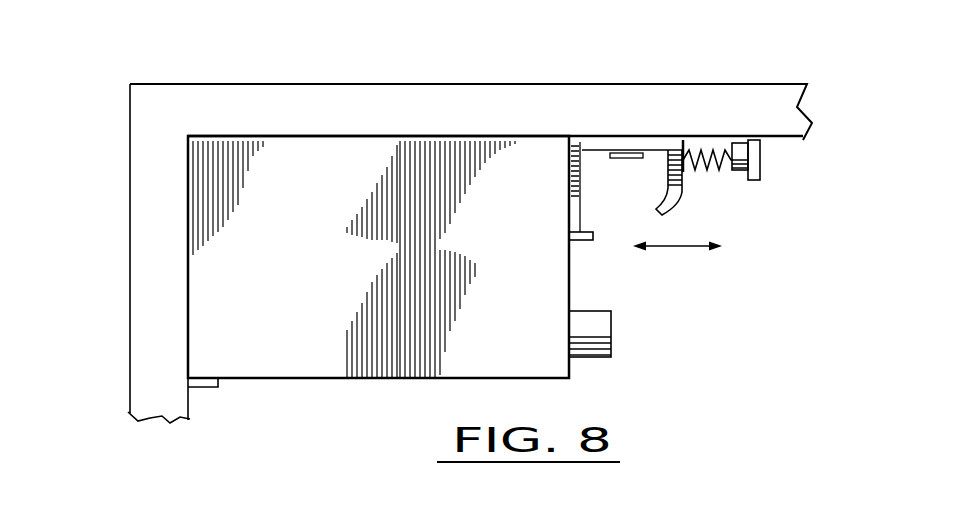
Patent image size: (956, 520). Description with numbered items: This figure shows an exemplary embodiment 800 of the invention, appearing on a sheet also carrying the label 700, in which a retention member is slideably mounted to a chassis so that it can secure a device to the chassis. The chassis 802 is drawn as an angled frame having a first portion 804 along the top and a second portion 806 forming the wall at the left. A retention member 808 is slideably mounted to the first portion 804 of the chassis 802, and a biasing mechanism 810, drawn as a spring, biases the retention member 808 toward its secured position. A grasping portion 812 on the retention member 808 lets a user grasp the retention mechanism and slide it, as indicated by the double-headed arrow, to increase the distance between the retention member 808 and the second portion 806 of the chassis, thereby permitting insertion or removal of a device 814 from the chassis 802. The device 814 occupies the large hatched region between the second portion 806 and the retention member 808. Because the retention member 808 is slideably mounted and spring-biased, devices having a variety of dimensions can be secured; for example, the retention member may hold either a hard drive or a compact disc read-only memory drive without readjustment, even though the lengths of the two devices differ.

The electronic device 700 is at (770, 7).
The exemplary embodiment 800 is at (688, 276).
The chassis 802 is at (283, 66).
The first portion 804 is at (532, 92).
The second portion 806 is at (141, 237).
The retention member 808 is at (581, 174).
The biasing mechanism 810 is at (713, 165).
The grasping portion 812 is at (580, 242).
The device 814 is at (298, 283).